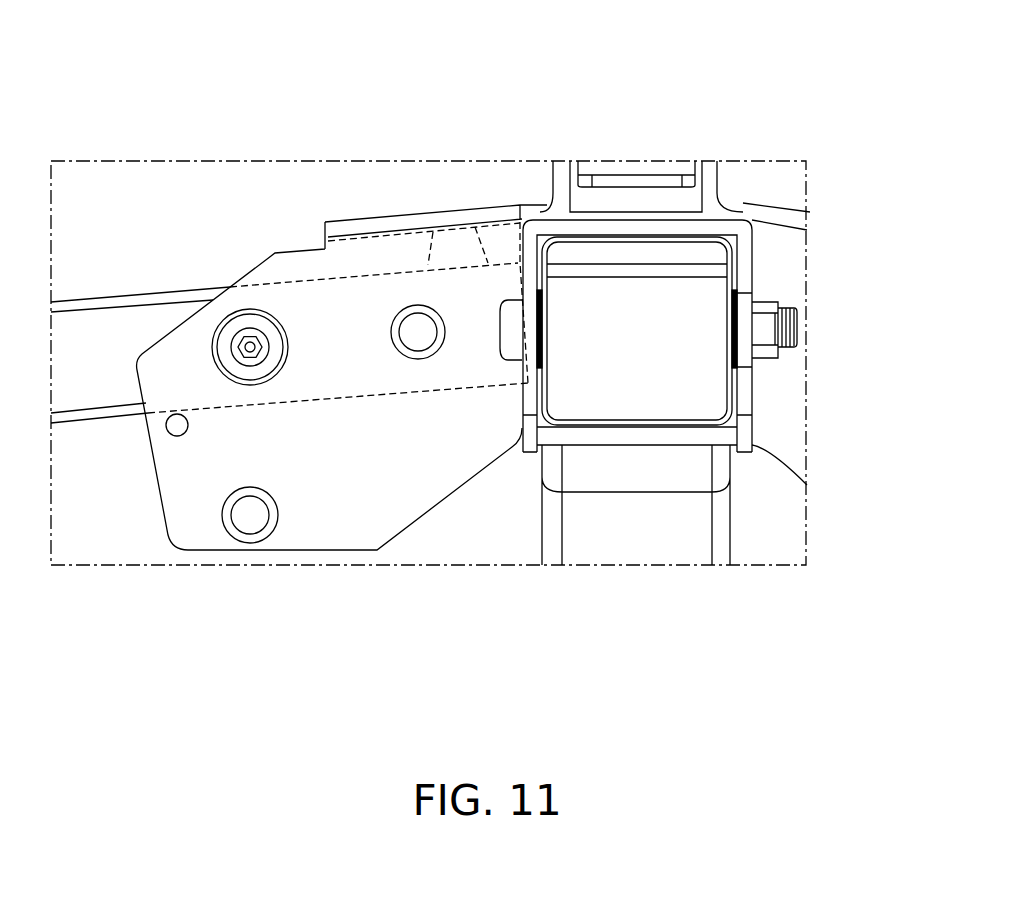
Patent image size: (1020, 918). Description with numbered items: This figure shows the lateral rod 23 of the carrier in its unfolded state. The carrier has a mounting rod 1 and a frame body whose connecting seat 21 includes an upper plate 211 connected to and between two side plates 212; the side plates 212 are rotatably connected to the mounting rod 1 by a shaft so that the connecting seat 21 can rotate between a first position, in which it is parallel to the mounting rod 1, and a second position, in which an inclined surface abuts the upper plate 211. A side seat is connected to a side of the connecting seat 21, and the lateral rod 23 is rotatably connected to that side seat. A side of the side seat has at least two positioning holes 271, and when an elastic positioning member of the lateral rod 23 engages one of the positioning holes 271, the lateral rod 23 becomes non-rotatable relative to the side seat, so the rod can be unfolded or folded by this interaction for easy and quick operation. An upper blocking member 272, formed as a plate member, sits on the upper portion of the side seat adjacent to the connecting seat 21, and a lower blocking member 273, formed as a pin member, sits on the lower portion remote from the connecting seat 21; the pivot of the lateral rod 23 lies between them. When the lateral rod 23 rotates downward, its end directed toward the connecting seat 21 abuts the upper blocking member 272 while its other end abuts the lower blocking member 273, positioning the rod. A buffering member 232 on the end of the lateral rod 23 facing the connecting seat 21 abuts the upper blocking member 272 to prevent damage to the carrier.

The mounting rod 1 is at (697, 293).
The connecting seat 21 is at (795, 404).
The upper plate 211 is at (712, 225).
The side plates 212 is at (752, 375).
The lateral rod 23 is at (118, 302).
The buffering member 232 is at (462, 243).
The positioning holes 271 is at (423, 337).
The upper blocking member 272 is at (360, 227).
The lower blocking member 273 is at (172, 432).